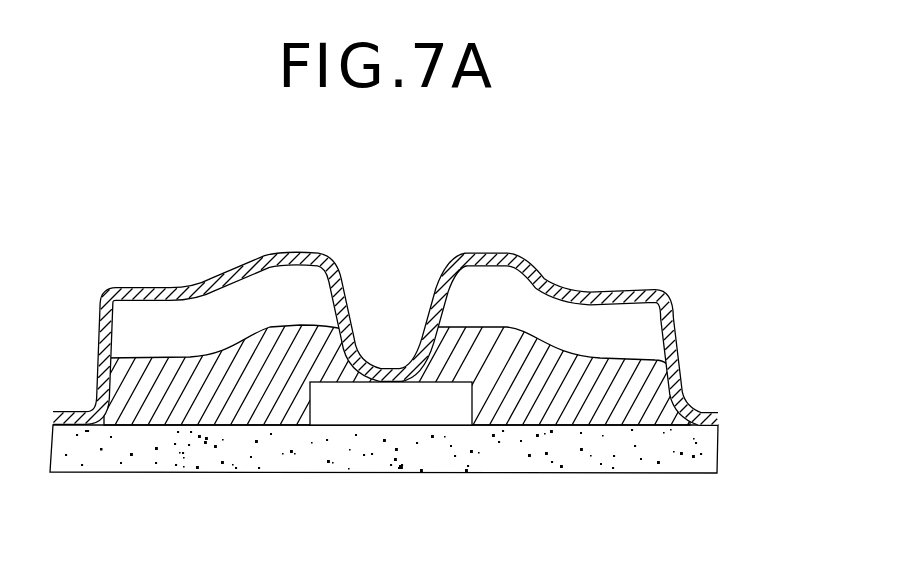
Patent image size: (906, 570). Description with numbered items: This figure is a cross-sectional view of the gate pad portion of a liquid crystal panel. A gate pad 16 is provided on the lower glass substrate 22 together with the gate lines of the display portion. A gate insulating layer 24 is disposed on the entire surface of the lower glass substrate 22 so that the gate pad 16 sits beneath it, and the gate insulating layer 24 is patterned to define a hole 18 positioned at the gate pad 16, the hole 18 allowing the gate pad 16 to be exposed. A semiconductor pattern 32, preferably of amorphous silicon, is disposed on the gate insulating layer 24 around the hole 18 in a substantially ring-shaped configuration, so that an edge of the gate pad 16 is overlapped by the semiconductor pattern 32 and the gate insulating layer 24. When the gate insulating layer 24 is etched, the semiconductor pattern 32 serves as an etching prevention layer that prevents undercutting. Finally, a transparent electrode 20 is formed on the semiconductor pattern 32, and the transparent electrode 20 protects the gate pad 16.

The gate pad 16 is at (385, 413).
The hole 18 is at (382, 307).
The transparent electrode 20 is at (543, 276).
The lower glass substrate 22 is at (720, 443).
The gate insulating layer 24 is at (660, 395).
The semiconductor pattern 32 is at (633, 322).